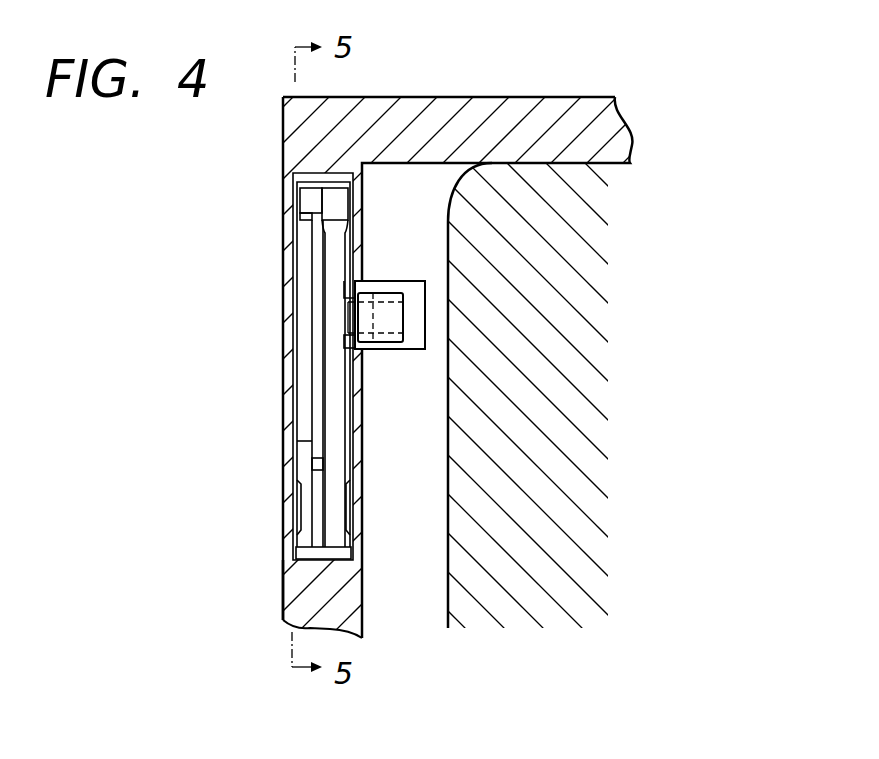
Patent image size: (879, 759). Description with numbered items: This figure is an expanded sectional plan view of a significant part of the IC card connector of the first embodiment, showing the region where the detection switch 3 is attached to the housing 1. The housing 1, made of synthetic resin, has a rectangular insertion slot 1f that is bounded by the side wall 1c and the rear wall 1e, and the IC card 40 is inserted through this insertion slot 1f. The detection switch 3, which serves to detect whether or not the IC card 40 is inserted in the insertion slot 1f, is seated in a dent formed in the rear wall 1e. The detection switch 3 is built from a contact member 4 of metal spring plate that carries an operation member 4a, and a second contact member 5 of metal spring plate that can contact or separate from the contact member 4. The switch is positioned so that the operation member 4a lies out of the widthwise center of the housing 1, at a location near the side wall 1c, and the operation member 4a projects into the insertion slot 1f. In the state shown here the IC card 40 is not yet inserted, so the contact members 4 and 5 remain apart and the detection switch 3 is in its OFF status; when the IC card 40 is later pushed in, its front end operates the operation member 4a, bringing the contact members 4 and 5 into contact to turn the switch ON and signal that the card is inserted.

The housing 1 is at (549, 96).
The side wall 1c is at (483, 103).
The rear wall 1e is at (288, 582).
The insertion slot 1f is at (428, 575).
The detection switch 3 is at (300, 346).
The contact member 4 is at (339, 208).
The operation member 4a is at (382, 312).
The contact member 5 is at (305, 207).
The IC card 40 is at (586, 566).